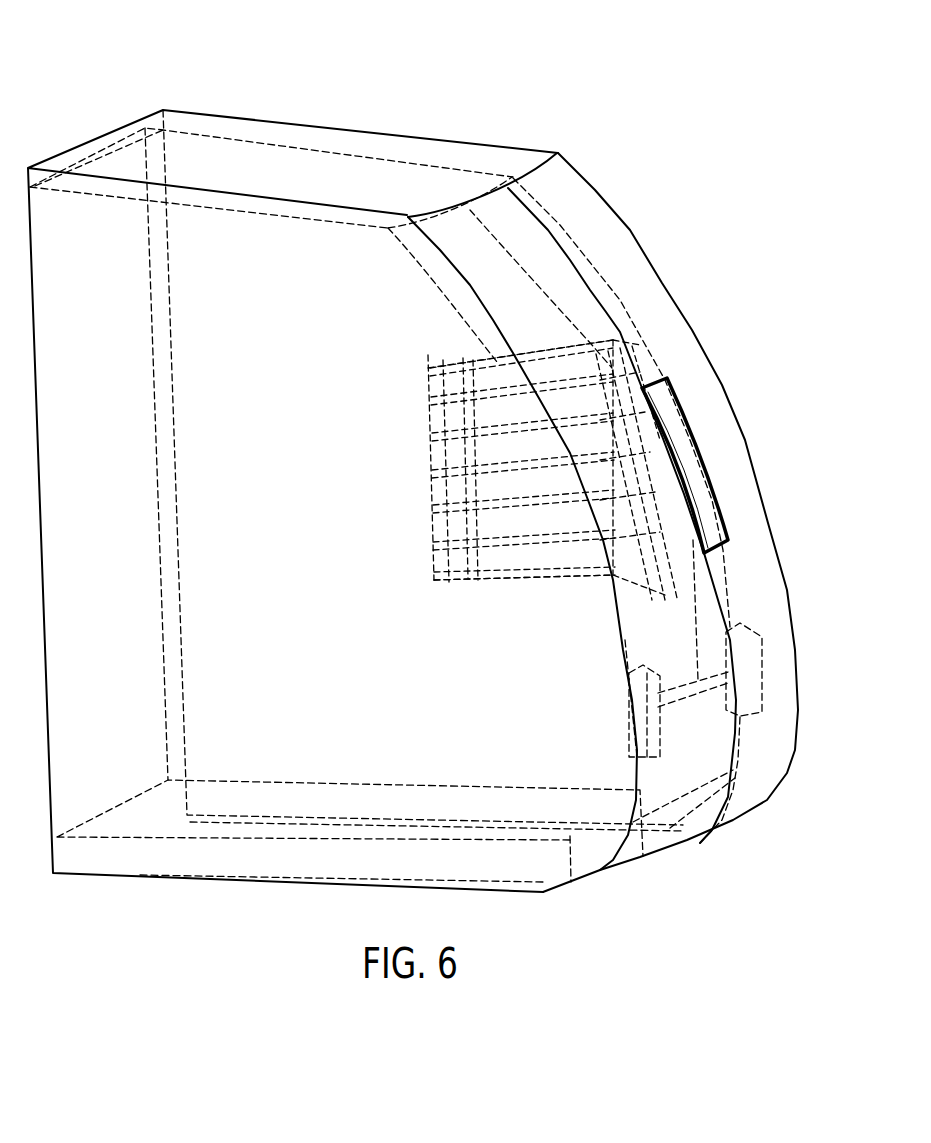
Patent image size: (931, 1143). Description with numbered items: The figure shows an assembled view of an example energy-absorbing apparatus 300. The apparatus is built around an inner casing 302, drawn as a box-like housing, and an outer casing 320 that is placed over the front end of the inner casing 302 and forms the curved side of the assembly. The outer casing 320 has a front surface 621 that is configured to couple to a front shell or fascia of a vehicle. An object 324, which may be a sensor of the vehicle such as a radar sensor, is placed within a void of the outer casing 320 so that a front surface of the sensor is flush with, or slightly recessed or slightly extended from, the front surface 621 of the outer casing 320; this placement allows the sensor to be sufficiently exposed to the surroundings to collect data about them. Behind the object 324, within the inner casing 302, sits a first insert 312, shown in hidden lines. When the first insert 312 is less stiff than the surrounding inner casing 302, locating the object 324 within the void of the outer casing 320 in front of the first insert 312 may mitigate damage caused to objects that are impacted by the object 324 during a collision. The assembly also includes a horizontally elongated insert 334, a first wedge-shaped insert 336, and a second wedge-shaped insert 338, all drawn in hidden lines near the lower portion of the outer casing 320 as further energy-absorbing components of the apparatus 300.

The energy-absorbing apparatus 300 is at (615, 72).
The inner casing 302 is at (428, 165).
The first insert 312 is at (517, 388).
The outer casing 320 is at (620, 215).
The object 324 is at (682, 423).
The horizontally elongated insert 334 is at (698, 680).
The first wedge-shaped insert 336 is at (653, 750).
The second wedge-shaped insert 338 is at (752, 710).
The front surface 621 is at (693, 369).